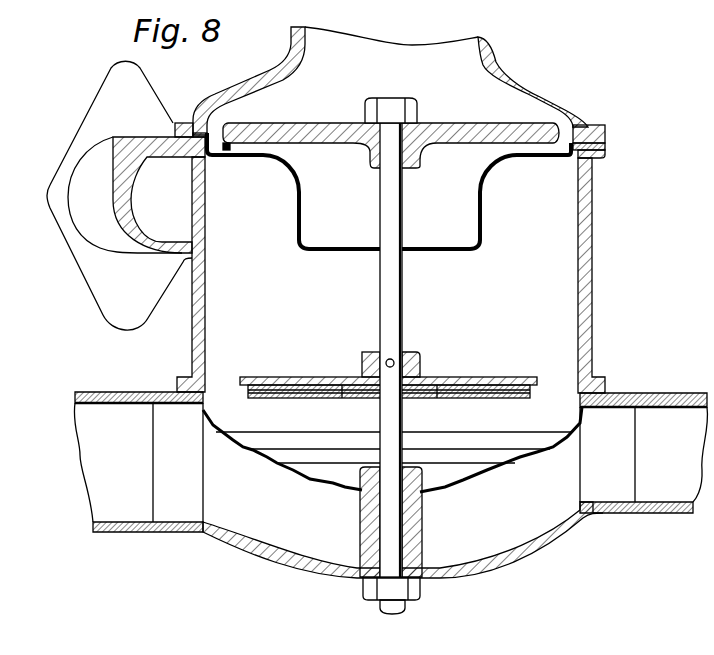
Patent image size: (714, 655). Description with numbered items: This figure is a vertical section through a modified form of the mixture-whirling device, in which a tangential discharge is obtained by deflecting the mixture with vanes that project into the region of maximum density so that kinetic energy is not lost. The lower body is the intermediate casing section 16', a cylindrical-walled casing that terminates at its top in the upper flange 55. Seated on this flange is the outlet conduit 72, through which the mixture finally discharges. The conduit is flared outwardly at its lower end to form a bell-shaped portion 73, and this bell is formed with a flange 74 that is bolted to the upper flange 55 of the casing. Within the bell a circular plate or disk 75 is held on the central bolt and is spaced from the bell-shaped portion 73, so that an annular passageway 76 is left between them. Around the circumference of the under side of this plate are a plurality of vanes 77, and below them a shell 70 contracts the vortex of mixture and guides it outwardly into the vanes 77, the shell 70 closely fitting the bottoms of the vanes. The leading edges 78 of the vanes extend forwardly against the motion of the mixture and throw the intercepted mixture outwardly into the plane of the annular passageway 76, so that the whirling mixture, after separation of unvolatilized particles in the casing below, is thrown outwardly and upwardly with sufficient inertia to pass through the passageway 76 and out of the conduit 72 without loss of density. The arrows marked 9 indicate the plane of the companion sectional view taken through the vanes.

The section line 9- 9 is at (199, 48).
The intermediate casing section 16' is at (390, 357).
The upper flange 55 is at (598, 158).
The shell 70 is at (312, 217).
The outlet conduit 72 is at (462, 67).
The flared lower end 73 is at (557, 99).
The flange 74 is at (600, 127).
The circular plate 75 is at (467, 126).
The annular passageway 76 is at (214, 140).
The vanes 77 is at (235, 150).
The leading edges 78 is at (237, 146).